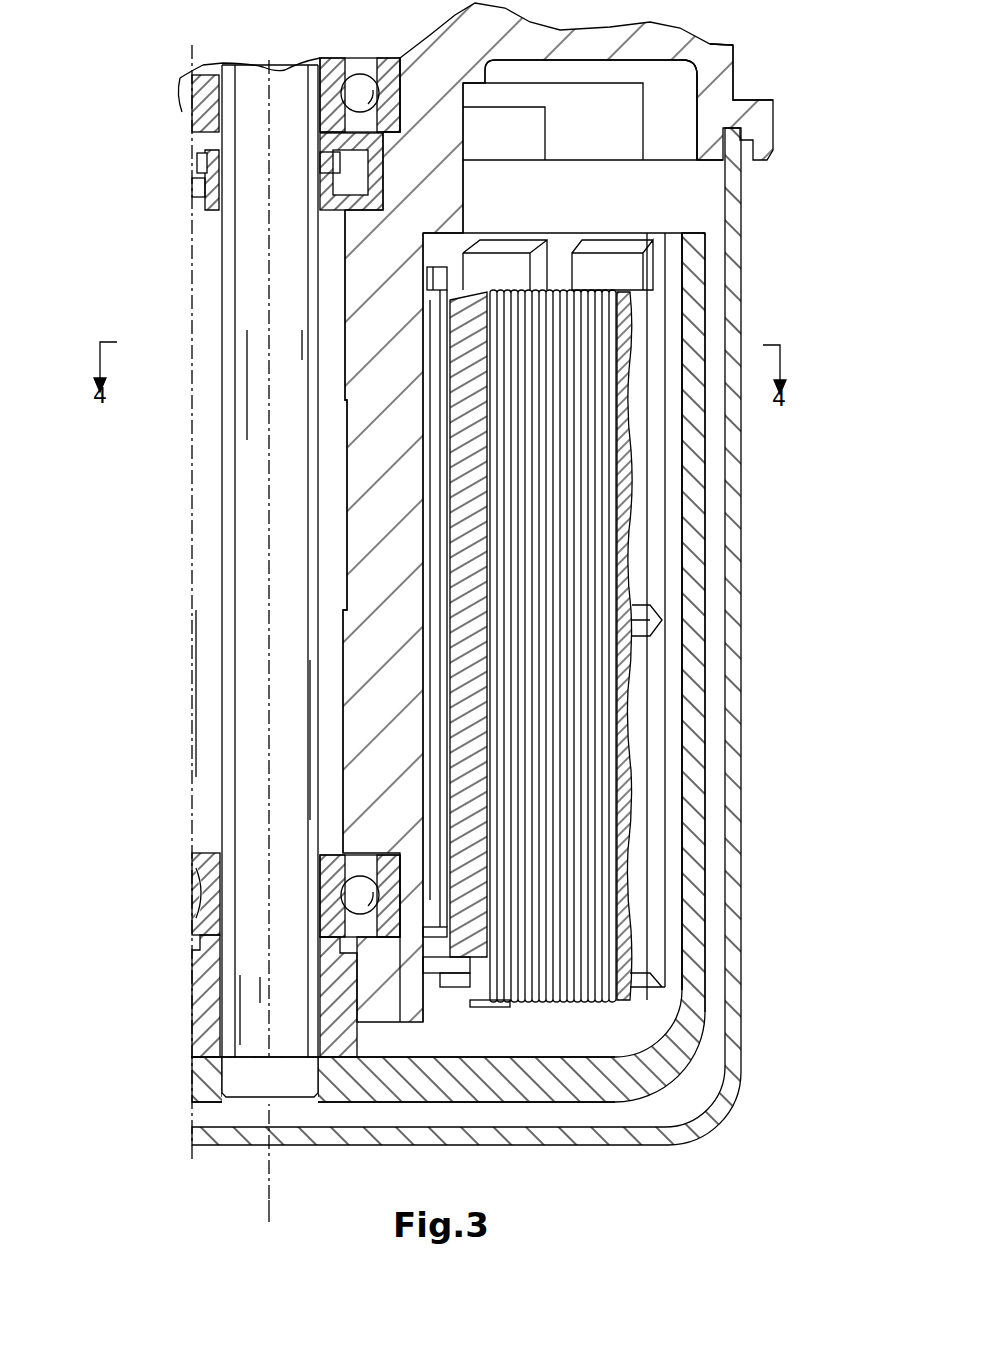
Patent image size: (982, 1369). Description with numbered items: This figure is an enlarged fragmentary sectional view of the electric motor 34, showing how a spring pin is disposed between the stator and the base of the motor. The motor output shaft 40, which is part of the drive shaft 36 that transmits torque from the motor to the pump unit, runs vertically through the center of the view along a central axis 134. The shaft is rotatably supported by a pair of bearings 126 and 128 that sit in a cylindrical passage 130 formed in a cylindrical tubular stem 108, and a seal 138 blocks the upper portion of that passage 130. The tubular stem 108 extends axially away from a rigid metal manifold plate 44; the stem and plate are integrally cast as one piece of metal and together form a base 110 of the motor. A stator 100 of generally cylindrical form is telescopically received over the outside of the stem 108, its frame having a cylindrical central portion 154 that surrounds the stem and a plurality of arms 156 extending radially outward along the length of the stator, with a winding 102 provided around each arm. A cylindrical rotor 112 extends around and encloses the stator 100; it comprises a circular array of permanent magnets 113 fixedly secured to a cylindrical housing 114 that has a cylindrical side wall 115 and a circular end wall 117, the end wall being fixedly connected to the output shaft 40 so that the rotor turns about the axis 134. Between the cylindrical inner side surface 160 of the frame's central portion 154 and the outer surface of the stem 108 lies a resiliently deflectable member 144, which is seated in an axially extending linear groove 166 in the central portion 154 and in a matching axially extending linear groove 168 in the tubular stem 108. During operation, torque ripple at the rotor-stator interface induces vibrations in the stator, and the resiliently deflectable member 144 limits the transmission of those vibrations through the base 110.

The electric motor 34 is at (717, 470).
The drive shaft 36 is at (204, 544).
The output shaft 40 is at (265, 502).
The manifold plate 44 is at (718, 92).
The stator 100 is at (632, 372).
The windings 102 is at (580, 435).
The tubular stem 108 is at (380, 358).
The base 110 is at (749, 70).
The rotor 112 is at (717, 675).
The permanent magnets 113 is at (640, 570).
The housing 114 is at (717, 725).
The side wall 115 is at (690, 522).
The end wall 117 is at (597, 1077).
The bearing 126 is at (362, 73).
The bearing 128 is at (213, 917).
The cylindrical passage 130 is at (330, 660).
The central axis 134 is at (270, 1207).
The seal 138 is at (205, 181).
The resiliently deflectable member 144 is at (418, 720).
The central portion 154 is at (477, 300).
The arms 156 is at (625, 895).
The inner side surface 160 is at (452, 942).
The grooves 166 is at (442, 280).
The grooves 168 is at (380, 297).